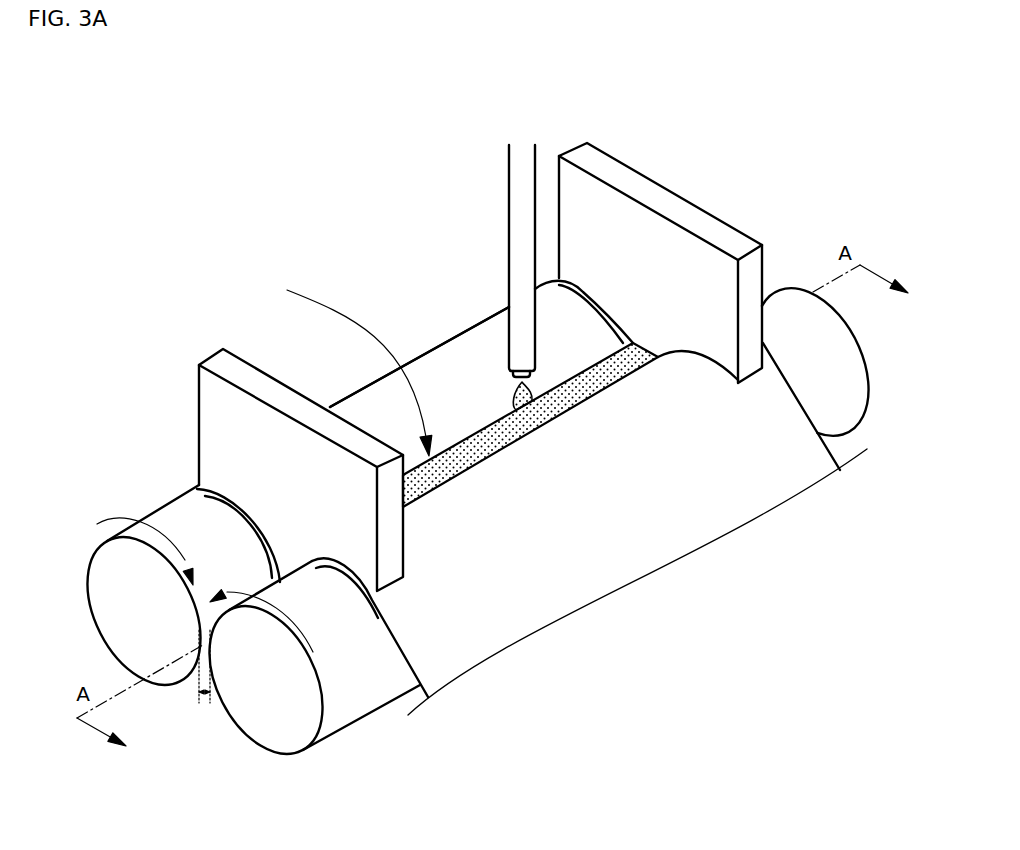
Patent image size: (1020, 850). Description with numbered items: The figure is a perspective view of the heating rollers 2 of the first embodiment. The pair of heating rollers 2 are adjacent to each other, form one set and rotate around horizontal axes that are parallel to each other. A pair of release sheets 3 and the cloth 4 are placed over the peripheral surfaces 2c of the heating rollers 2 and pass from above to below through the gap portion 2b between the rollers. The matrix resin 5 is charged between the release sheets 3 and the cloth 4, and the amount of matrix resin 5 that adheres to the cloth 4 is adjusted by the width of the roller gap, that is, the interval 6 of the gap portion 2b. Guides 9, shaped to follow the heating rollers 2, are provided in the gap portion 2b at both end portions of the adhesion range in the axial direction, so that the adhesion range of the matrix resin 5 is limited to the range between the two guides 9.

The heating roller 2 is at (100, 577).
The gap portion 2b is at (353, 358).
The peripheral surface 2c is at (243, 583).
The release sheet 3 is at (587, 295).
The cloth 4 is at (377, 397).
The matrix resin 5 is at (440, 472).
The interval 6 is at (202, 694).
The guide 9 is at (252, 378).